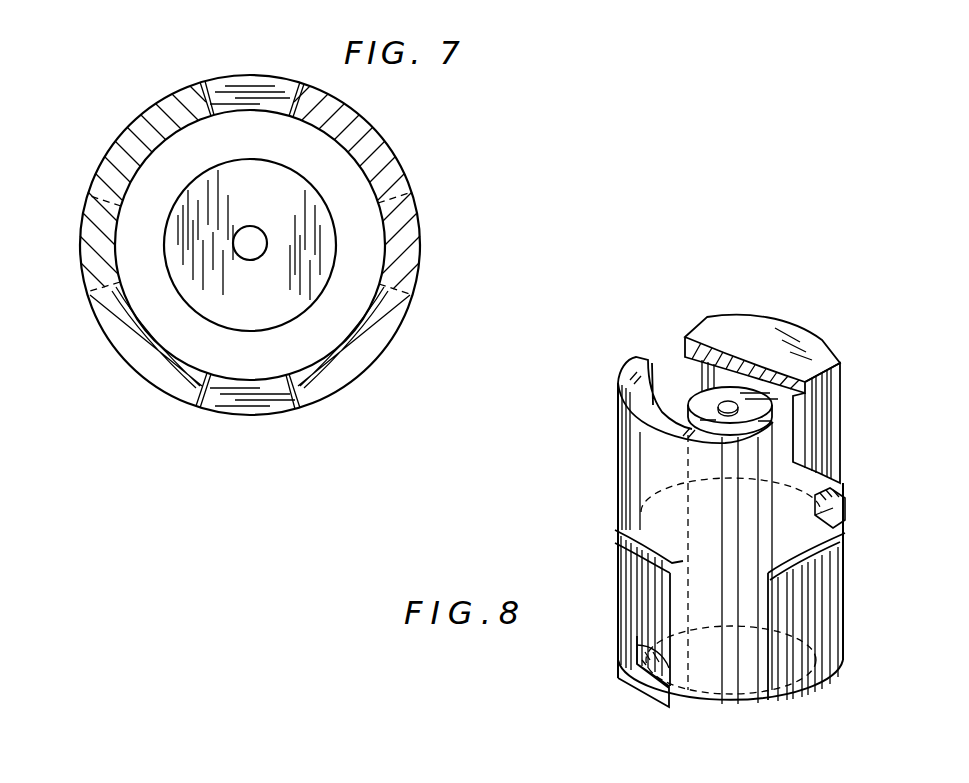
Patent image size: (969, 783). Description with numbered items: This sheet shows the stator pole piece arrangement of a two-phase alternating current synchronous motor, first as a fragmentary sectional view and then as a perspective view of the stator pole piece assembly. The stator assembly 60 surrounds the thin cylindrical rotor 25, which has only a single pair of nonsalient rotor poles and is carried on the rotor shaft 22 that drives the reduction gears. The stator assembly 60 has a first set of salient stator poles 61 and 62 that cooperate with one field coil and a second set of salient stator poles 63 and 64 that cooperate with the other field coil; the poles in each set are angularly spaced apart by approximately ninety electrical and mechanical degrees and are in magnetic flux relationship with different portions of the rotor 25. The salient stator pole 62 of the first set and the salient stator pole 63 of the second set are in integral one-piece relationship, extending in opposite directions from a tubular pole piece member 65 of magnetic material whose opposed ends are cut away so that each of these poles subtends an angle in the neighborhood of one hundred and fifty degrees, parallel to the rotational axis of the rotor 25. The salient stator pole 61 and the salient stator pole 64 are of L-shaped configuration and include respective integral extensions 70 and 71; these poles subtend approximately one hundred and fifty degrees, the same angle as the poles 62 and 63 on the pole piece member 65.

In FIG. 7, the rotor shaft 22 is at (245, 260).
In FIG. 8, the rotor shaft 22 is at (728, 408).
In FIG. 7, the thin cylindrical rotor 25 is at (305, 175).
In FIG. 8, the thin cylindrical rotor 25 is at (693, 403).
In FIG. 7, the stator assembly 60 is at (373, 368).
In FIG. 8, the stator assembly 60 is at (618, 497).
In FIG. 7, the salient stator pole 61 is at (410, 182).
In FIG. 8, the salient stator pole 61 is at (845, 420).
In FIG. 7, the salient stator pole 62 is at (112, 342).
In FIG. 8, the salient stator pole 62 is at (620, 417).
In FIG. 7, the salient stator pole 63 is at (263, 417).
In FIG. 8, the salient stator pole 63 is at (843, 510).
In FIG. 7, the salient stator pole 64 is at (252, 90).
In FIG. 8, the salient stator pole 64 is at (620, 642).
In FIG. 7, the tubular pole piece member 65 is at (95, 180).
In FIG. 8, the tubular pole piece member 65 is at (807, 685).
In FIG. 8, the integral extension 70 is at (790, 334).
In FIG. 8, the integral extension 71 is at (660, 672).